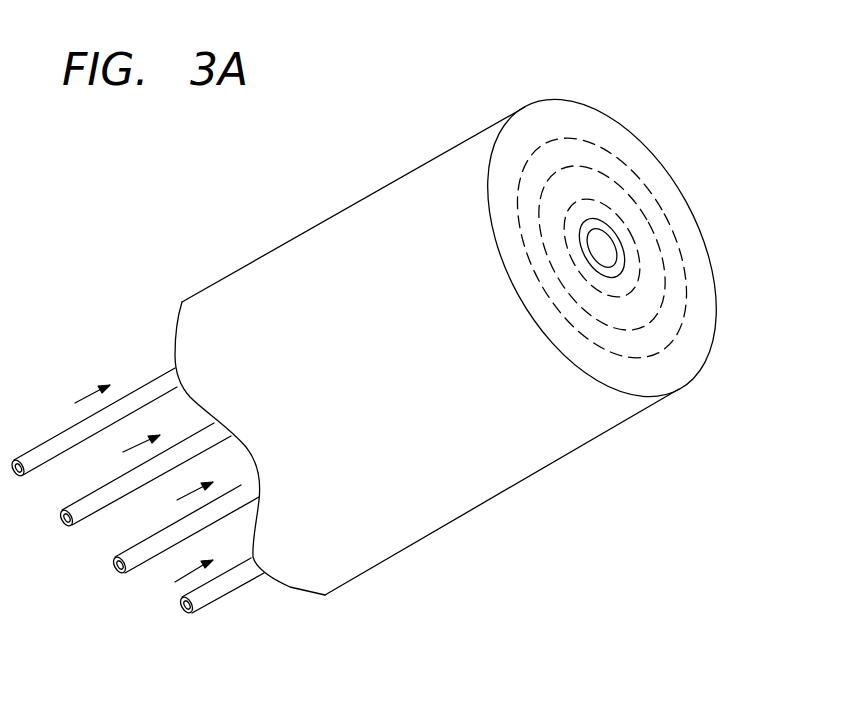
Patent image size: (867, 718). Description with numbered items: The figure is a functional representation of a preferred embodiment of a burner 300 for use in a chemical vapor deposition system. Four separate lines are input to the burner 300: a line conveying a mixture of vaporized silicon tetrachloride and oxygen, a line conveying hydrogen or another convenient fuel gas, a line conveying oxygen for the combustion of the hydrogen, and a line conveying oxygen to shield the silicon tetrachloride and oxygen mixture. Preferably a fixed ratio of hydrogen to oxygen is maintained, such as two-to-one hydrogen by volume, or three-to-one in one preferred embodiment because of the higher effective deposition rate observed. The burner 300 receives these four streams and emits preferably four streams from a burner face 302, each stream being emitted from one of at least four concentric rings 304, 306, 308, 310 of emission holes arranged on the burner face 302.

The burner 300 is at (275, 192).
The burner face 302 is at (548, 118).
The concentric ring of emission holes 304 is at (588, 220).
The concentric ring of emission holes 306 is at (642, 272).
The concentric ring of emission holes 308 is at (638, 202).
The concentric ring of emission holes 310 is at (608, 145).